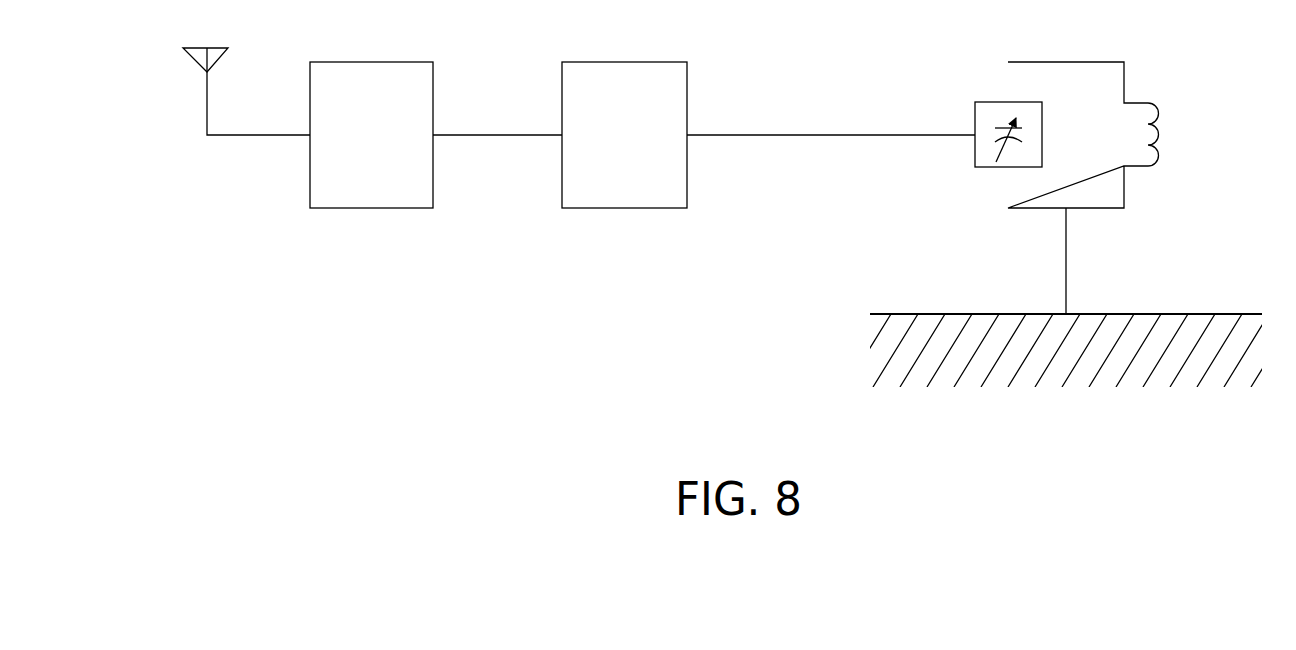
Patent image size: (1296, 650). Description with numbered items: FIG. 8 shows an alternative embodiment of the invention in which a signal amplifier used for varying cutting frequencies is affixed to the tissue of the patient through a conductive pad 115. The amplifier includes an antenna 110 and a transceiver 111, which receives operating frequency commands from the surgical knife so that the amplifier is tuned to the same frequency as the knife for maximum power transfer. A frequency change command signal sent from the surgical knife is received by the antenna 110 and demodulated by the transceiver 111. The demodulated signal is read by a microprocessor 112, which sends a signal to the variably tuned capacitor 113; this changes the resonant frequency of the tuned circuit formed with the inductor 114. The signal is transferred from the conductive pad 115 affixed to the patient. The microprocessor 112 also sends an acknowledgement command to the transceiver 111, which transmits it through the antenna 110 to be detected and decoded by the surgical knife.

The antenna 110 is at (190, 60).
The transceiver 111 is at (373, 208).
The microprocessor 112 is at (623, 208).
The variably tuned capacitor 113 is at (975, 118).
The inductor 114 is at (1154, 110).
The conductive pad 115 is at (1220, 302).